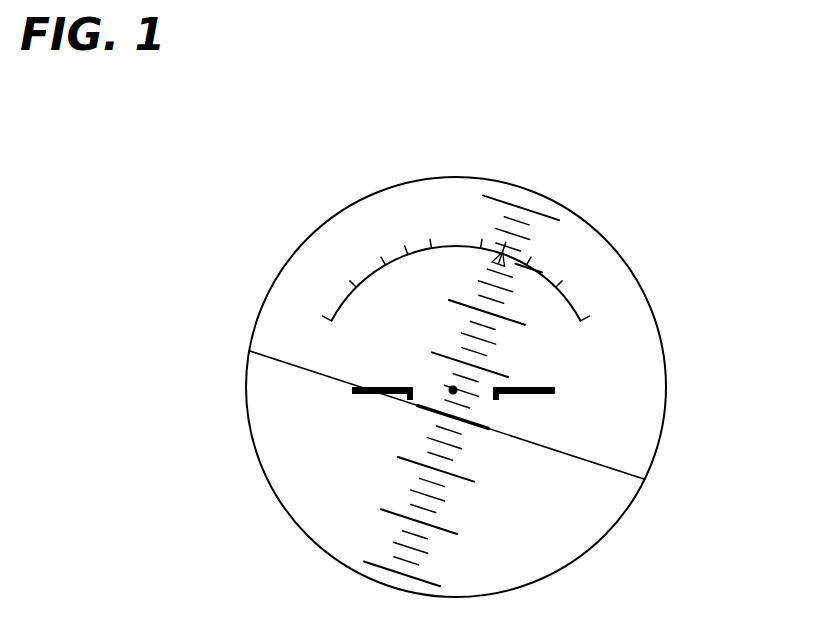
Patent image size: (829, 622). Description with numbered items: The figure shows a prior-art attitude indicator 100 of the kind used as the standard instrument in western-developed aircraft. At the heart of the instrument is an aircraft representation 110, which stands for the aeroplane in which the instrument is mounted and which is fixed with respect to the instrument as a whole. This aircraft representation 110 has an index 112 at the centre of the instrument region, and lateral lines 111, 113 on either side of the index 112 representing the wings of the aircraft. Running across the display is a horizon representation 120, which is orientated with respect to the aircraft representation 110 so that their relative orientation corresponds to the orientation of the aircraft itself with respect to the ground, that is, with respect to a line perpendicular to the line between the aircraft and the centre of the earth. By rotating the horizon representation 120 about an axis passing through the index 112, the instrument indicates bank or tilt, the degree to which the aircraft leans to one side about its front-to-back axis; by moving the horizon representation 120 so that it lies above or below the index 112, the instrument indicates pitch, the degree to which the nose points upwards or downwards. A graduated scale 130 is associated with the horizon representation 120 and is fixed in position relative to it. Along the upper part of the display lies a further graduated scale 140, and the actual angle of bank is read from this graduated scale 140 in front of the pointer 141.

The attitude indicator 100 is at (652, 243).
The aircraft representation 110 is at (527, 407).
The lateral line 111 is at (372, 394).
The index 112 is at (450, 393).
The lateral line 113 is at (515, 397).
The horizon representation 120 is at (617, 468).
The graduated scale 130 is at (545, 207).
The graduated scale 140 is at (572, 304).
The pointer 141 is at (488, 253).